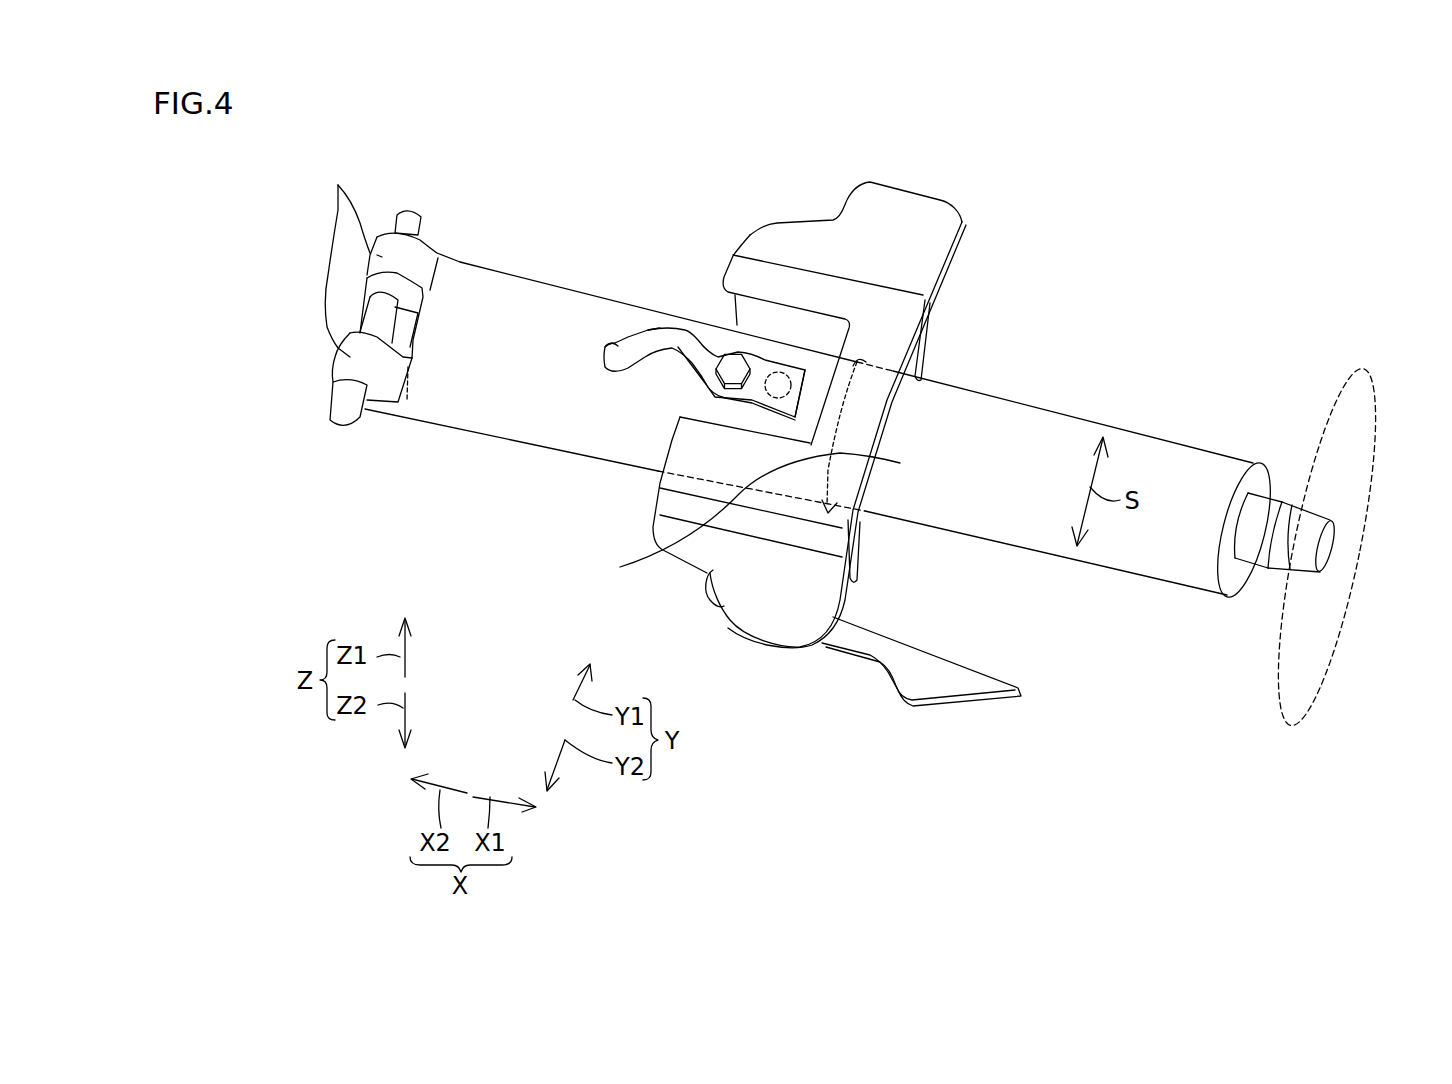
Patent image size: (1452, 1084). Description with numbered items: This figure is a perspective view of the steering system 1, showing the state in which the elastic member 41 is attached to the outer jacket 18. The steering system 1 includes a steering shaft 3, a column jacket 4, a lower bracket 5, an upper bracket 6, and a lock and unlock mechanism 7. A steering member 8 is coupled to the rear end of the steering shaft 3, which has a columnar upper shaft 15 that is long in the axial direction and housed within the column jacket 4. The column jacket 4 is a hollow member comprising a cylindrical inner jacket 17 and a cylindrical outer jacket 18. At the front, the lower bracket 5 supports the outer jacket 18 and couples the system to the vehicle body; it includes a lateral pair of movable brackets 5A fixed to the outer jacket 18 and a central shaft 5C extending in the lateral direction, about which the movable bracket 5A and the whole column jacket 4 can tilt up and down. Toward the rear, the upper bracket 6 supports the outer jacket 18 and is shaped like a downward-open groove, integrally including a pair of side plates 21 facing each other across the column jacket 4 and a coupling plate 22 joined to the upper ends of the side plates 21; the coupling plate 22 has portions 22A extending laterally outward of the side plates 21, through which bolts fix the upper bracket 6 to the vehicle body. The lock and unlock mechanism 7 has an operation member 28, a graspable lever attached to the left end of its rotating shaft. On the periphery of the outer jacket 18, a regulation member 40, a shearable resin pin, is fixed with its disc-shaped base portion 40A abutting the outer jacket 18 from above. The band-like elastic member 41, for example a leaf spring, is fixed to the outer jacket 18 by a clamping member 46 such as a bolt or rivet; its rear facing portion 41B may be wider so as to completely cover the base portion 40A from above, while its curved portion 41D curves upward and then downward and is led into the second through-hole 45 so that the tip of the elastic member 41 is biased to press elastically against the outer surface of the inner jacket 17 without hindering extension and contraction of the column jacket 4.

The steering system 1 is at (1034, 172).
The steering shaft 3 is at (1278, 583).
The column jacket 4 is at (823, 440).
The lower bracket 5 is at (384, 268).
The movable bracket 5A is at (338, 186).
The central shaft 5C is at (395, 289).
The upper bracket 6 is at (837, 452).
The lock and unlock mechanism 7 is at (708, 620).
The steering member 8 is at (1300, 672).
The upper shaft 15 is at (1257, 550).
The inner jacket 17 is at (742, 520).
The outer jacket 18 is at (557, 410).
The side plate 21 is at (913, 368).
The coupling plate 22 is at (821, 429).
The portion 22A is at (918, 208).
The operation member 28 is at (944, 685).
The regulation member 40 is at (795, 340).
The base portion 40A is at (768, 372).
The elastic member 41 is at (717, 321).
The facing portion 41B is at (805, 372).
The curved portion 41D is at (667, 337).
The second through-hole 45 is at (613, 347).
The clamping member 46 is at (732, 365).